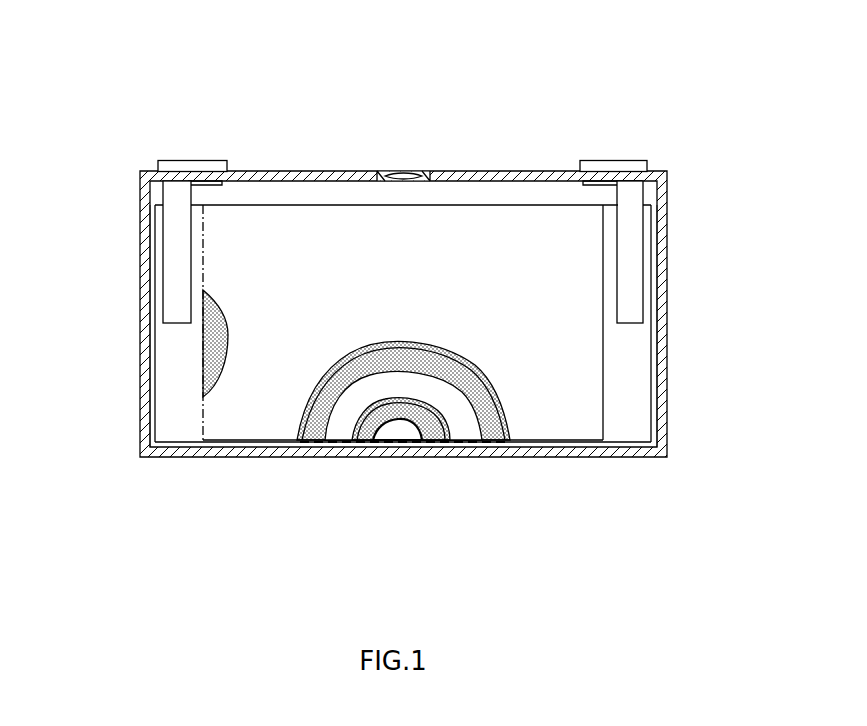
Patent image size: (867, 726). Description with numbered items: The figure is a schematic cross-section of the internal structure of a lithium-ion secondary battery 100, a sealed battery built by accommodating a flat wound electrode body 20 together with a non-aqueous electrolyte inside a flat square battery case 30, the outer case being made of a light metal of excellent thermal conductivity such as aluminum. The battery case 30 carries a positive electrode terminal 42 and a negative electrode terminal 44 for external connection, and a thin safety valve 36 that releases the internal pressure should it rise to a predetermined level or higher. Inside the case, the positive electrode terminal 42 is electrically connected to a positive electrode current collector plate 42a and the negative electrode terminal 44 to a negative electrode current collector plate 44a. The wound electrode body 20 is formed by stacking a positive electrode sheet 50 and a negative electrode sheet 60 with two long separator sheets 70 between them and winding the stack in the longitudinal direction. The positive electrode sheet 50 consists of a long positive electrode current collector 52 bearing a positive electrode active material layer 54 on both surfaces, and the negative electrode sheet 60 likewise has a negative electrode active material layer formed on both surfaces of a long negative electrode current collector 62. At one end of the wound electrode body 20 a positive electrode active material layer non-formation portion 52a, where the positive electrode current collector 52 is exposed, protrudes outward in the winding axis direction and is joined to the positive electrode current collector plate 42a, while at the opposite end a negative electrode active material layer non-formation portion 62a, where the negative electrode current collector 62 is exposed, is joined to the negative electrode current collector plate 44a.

The lithium-ion secondary battery 100 is at (683, 99).
The wound electrode body 20 is at (325, 202).
The battery case 30 is at (668, 278).
The safety valve 36 is at (412, 170).
The positive electrode terminal 42 is at (202, 160).
The positive electrode current collector plate 42a is at (177, 243).
The negative electrode terminal 44 is at (617, 161).
The negative electrode current collector plate 44a is at (634, 240).
The positive electrode sheet 50 is at (313, 443).
The positive electrode current collector 52 is at (152, 345).
The positive electrode active material layer non-formation portion 52a is at (168, 413).
The positive electrode active material layer 54 is at (228, 318).
The negative electrode sheet 60 is at (372, 440).
The negative electrode current collector 62 is at (652, 350).
The negative electrode active material layer non-formation portion 62a is at (632, 410).
The separator sheet 70 is at (245, 393).